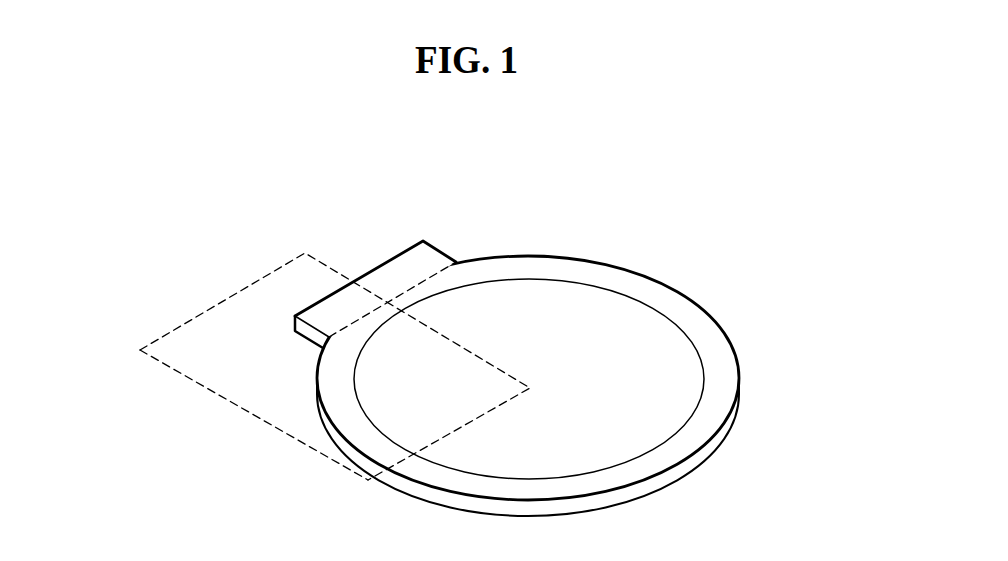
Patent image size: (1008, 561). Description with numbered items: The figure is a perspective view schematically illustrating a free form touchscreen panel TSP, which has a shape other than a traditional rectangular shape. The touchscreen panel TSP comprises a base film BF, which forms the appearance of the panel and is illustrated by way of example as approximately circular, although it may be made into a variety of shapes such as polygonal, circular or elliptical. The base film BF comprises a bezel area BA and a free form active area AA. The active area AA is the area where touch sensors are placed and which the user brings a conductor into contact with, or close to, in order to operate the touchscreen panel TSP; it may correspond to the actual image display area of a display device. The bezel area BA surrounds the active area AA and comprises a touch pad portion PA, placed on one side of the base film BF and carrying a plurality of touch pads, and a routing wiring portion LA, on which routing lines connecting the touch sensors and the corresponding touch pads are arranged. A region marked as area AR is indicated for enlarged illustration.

The touchscreen panel TSP is at (270, 219).
The touch pad portion PA is at (432, 254).
The bezel area BA is at (576, 209).
The routing wiring portion LA is at (505, 265).
The base film BF is at (727, 373).
The active area AA is at (640, 435).
The area AR is at (247, 413).